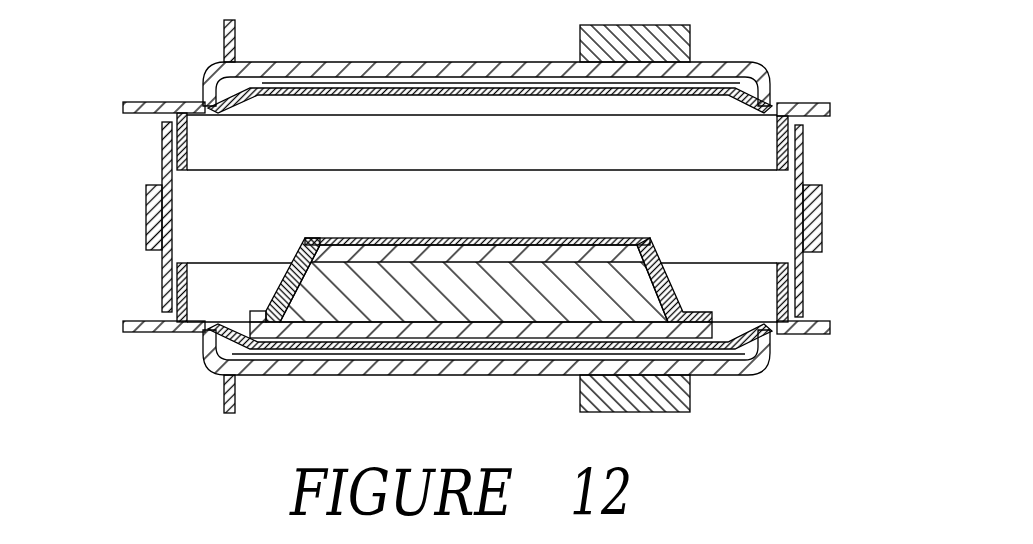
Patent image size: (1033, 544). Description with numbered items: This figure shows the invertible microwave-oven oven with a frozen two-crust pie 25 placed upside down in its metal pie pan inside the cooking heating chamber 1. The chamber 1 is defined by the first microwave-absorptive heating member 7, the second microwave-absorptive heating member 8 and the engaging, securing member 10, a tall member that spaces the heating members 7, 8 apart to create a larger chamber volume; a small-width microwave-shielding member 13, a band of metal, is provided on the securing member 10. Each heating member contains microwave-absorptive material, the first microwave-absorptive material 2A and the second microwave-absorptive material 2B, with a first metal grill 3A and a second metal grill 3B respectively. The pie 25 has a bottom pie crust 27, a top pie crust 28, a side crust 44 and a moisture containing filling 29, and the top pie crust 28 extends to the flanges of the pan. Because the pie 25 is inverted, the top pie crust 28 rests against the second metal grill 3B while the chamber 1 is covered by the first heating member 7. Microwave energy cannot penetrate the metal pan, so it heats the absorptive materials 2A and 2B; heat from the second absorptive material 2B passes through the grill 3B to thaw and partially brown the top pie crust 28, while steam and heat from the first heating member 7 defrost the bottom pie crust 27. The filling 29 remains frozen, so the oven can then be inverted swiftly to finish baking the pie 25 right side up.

The cooking heating chamber 1 is at (439, 218).
The first microwave-absorptive heating member 7 is at (369, 45).
The second microwave-absorptive heating member 8 is at (371, 387).
The first microwave-absorptive material 2A is at (565, 62).
The second microwave-absorptive material 2B is at (565, 390).
The first metal grill 3A is at (567, 88).
The second metal grill 3B is at (567, 365).
The engaging, securing member 10 is at (803, 175).
The small-width microwave-shielding member 13 is at (823, 208).
The frozen pie 25 is at (182, 251).
The bottom pie crust 27 is at (615, 179).
The moisture containing filling 29 is at (597, 275).
The side crust 44 is at (781, 280).
The top pie crust 28 is at (587, 340).